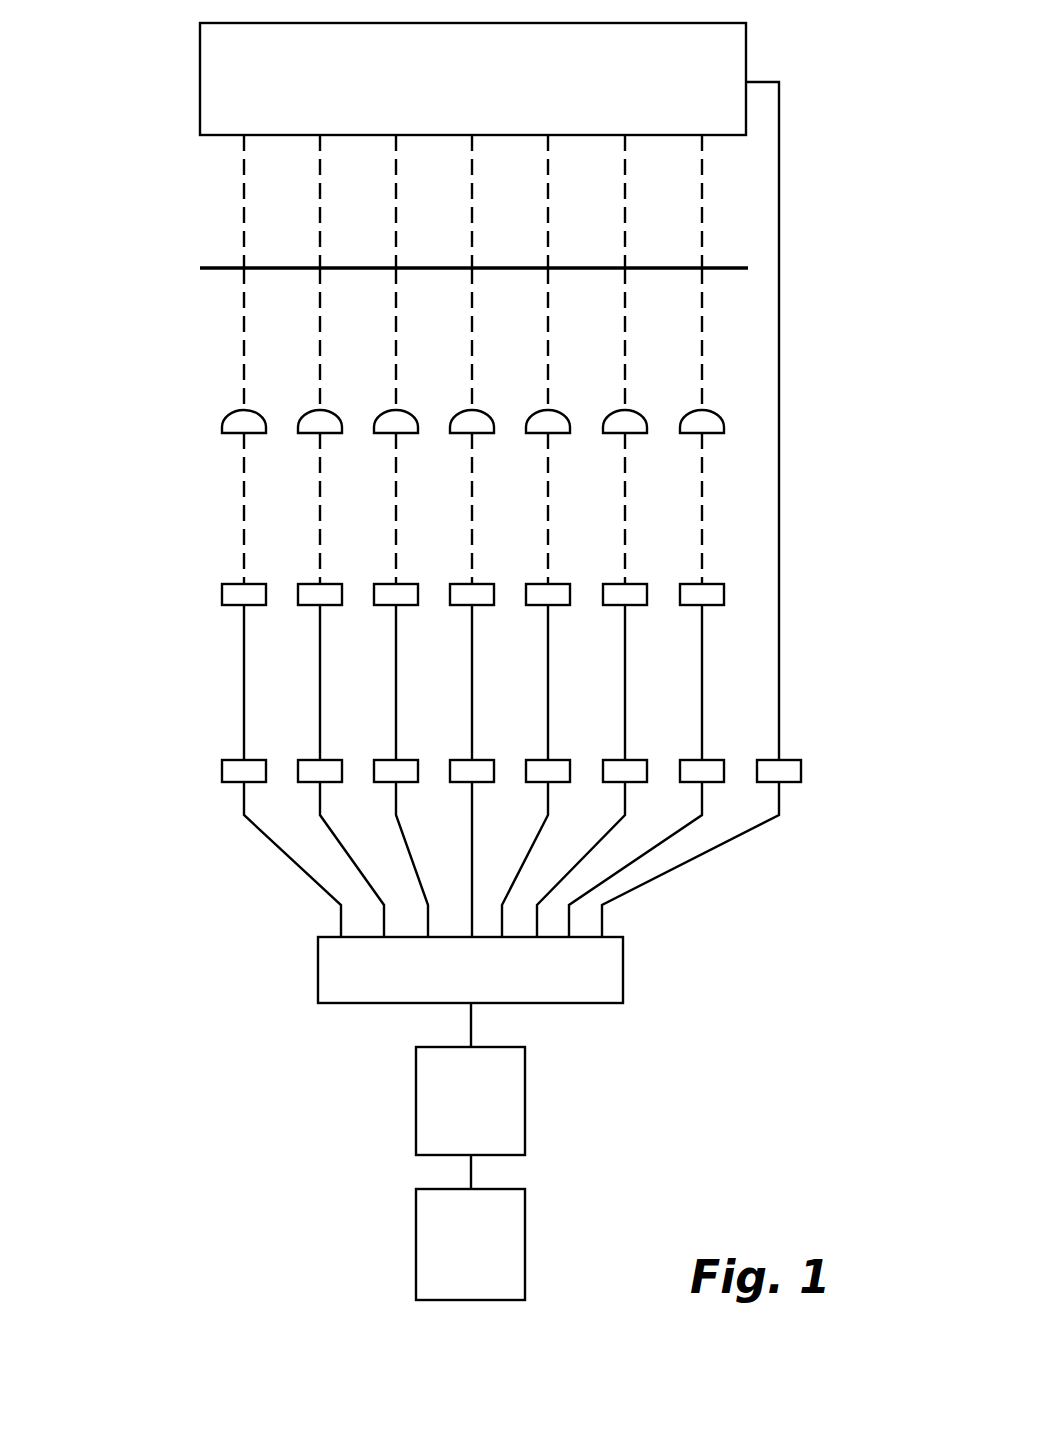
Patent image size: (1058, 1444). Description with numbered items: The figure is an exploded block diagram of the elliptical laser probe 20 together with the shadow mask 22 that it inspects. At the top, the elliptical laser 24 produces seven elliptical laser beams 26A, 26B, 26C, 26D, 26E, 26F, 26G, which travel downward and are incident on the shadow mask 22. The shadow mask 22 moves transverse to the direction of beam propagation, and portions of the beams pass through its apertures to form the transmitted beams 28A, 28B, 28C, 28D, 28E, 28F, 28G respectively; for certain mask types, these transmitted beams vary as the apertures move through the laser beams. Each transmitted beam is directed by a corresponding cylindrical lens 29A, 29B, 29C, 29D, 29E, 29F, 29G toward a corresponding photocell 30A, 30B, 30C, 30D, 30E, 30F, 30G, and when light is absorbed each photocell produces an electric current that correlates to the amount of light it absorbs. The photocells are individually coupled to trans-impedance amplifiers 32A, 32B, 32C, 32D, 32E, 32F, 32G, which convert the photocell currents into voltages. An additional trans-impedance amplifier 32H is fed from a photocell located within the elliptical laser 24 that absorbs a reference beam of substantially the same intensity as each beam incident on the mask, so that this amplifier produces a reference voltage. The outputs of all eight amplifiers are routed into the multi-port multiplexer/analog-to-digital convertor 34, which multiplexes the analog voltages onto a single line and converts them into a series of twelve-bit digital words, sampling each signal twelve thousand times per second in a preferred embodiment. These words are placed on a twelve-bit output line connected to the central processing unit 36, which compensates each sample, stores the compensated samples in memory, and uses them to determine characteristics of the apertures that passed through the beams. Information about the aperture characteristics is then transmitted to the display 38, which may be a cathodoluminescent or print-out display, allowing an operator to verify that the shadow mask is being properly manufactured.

The elliptical laser probe 20 is at (247, 922).
The shadow mask 22 is at (207, 271).
The elliptical laser 24 is at (200, 90).
The elliptical laser beam 26A is at (242, 150).
The elliptical laser beam 26B is at (318, 147).
The elliptical laser beam 26C is at (396, 216).
The elliptical laser beam 26D is at (470, 247).
The elliptical laser beam 26E is at (552, 243).
The elliptical laser beam 26F is at (630, 200).
The elliptical laser beam 26G is at (708, 162).
The transmitted beam 28A is at (244, 310).
The transmitted beam 28B is at (318, 304).
The transmitted beam 28C is at (393, 343).
The transmitted beam 28D is at (468, 393).
The transmitted beam 28E is at (560, 382).
The transmitted beam 28F is at (640, 337).
The transmitted beam 28G is at (703, 297).
The cylindrical lens 29A is at (220, 434).
The cylindrical lens 29B is at (296, 436).
The cylindrical lens 29C is at (372, 433).
The cylindrical lens 29D is at (446, 430).
The cylindrical lens 29E is at (578, 413).
The cylindrical lens 29F is at (655, 413).
The cylindrical lens 29G is at (728, 430).
The photocell 30A is at (223, 590).
The photocell 30B is at (315, 584).
The photocell 30C is at (372, 600).
The photocell 30D is at (494, 580).
The photocell 30E is at (571, 580).
The photocell 30F is at (649, 585).
The photocell 30G is at (727, 606).
The trans-impedance amplifier 32A is at (221, 776).
The trans-impedance amplifier 32B is at (301, 758).
The trans-impedance amplifier 32C is at (376, 758).
The trans-impedance amplifier 32D is at (495, 758).
The trans-impedance amplifier 32E is at (573, 758).
The trans-impedance amplifier 32F is at (650, 758).
The trans-impedance amplifier 32G is at (729, 758).
The trans-impedance amplifier 32H is at (790, 786).
The multiplexer/analog-to-digital convertor 34 is at (627, 968).
The central processing unit 36 is at (527, 1112).
The display 38 is at (527, 1200).